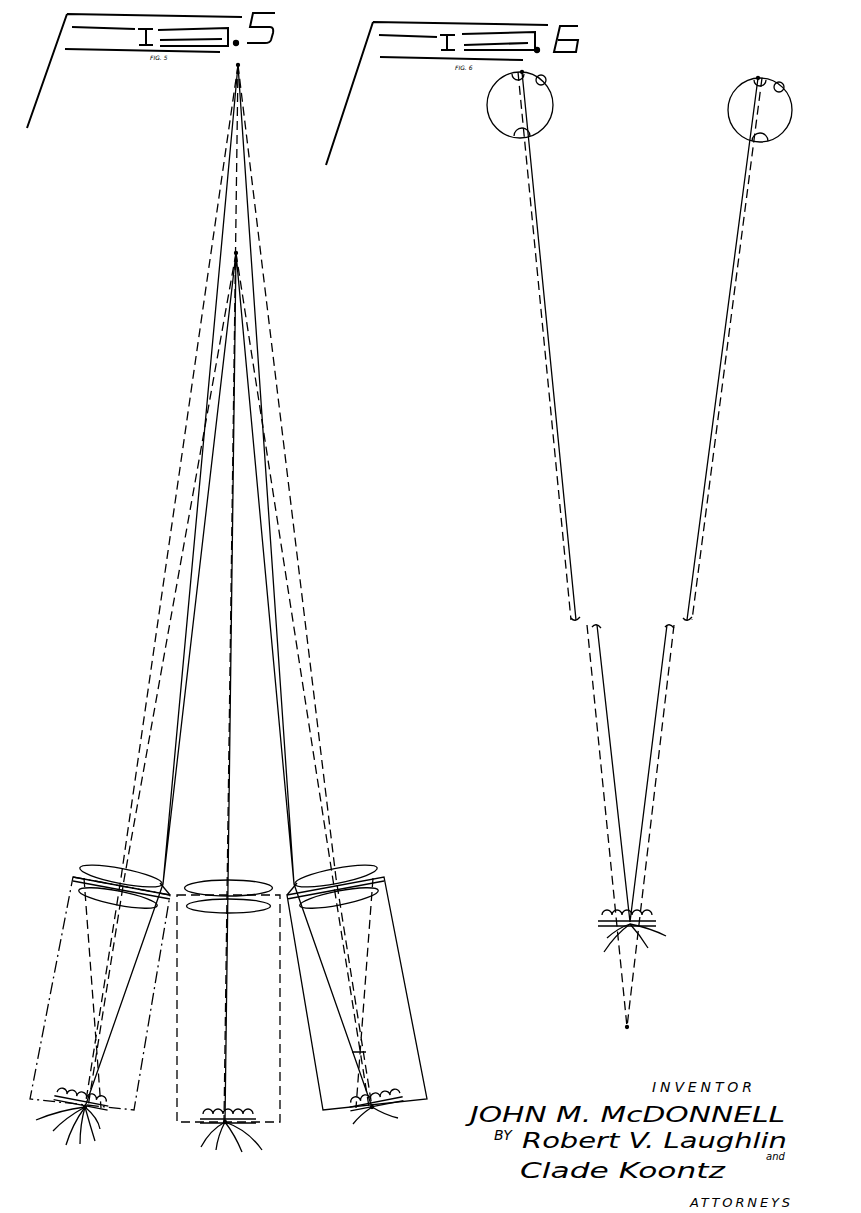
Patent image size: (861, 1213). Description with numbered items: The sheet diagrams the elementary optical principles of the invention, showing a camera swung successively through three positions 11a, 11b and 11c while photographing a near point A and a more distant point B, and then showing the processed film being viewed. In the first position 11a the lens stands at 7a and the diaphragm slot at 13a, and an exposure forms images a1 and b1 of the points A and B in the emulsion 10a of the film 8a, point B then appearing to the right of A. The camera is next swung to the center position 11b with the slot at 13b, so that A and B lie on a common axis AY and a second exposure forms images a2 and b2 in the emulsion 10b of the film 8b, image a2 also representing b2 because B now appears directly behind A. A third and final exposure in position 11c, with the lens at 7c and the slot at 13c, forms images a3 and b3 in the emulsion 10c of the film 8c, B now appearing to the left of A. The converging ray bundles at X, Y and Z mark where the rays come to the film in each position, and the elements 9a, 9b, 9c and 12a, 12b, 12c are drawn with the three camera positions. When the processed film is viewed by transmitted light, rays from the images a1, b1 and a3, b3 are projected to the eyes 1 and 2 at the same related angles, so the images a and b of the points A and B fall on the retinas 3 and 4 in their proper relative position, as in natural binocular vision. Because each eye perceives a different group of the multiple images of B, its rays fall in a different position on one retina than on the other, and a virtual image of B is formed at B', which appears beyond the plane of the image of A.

In FIG. 6, the eye 1 is at (498, 100).
In FIG. 6, the eye 2 is at (742, 119).
In FIG. 6, the retina 3 is at (546, 83).
In FIG. 6, the retina 4 is at (783, 90).
In FIG. 6, the image of point A a is at (775, 76).
In FIG. 6, the image of point B b is at (636, 935).
In FIG. 5, the point B is at (246, 70).
In FIG. 6, the point B is at (640, 69).
In FIG. 6, the virtual image of B B' is at (636, 1036).
In FIG. 5, the point A is at (243, 256).
In FIG. 5, the lens position 7a is at (350, 893).
In FIG. 5, the lens position 7c is at (106, 892).
In FIG. 5, the film 8a is at (372, 1107).
In FIG. 5, the film 8b is at (225, 1122).
In FIG. 5, the film 8c is at (85, 1107).
In FIG. 5, the filament of right cell 9a is at (378, 1094).
In FIG. 5, the filament of middle cell 9b is at (235, 1110).
In FIG. 5, the filament of left cell 9c is at (93, 1093).
In FIG. 5, the emulsion 10a is at (372, 1107).
In FIG. 5, the emulsion 10b is at (225, 1122).
In FIG. 5, the emulsion 10c is at (85, 1107).
In FIG. 5, the camera position 11a is at (404, 968).
In FIG. 5, the camera position 11b is at (280, 1101).
In FIG. 5, the camera position 11c is at (136, 1096).
In FIG. 5, the objective lens of right tube 12a is at (378, 876).
In FIG. 5, the objective lens of middle tube 12b is at (216, 889).
In FIG. 5, the objective lens of left tube 12c is at (80, 868).
In FIG. 5, the slot position 13a is at (292, 895).
In FIG. 5, the slot position 13b is at (244, 898).
In FIG. 5, the slot position 13c is at (169, 894).
In FIG. 5, the image a1 is at (248, 1137).
In FIG. 5, the image a2 is at (160, 1137).
In FIG. 5, the image a3 is at (62, 1127).
In FIG. 5, the image b1 is at (196, 1134).
In FIG. 5, the image b2 is at (139, 1136).
In FIG. 5, the image b3 is at (96, 1126).
In FIG. 5, the image point X is at (371, 1120).
In FIG. 5, the axis point Y is at (221, 1153).
In FIG. 5, the image point Z is at (74, 1144).